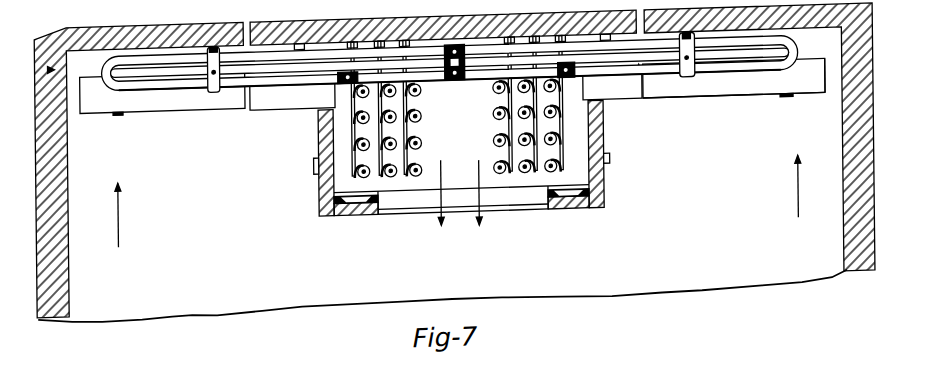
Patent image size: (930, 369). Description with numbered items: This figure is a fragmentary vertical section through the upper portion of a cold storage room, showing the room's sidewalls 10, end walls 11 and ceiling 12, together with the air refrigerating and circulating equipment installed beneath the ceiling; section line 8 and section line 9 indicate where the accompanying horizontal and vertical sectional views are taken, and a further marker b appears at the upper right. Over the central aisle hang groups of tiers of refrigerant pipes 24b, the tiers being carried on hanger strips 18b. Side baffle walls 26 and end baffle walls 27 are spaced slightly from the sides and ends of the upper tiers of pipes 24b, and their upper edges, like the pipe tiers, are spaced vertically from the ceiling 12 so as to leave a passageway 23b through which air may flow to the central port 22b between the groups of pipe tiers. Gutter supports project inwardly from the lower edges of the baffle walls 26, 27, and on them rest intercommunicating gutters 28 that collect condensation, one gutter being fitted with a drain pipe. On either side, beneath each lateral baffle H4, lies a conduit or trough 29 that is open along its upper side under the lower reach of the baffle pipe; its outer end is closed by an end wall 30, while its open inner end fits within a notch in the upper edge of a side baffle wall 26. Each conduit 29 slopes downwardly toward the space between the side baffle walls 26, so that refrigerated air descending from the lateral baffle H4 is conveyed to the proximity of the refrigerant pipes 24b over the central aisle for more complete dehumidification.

The section line 8— 8 is at (34, 40).
The section line 9— 9 is at (583, 9).
The section line b is at (880, 41).
The sidewalls 10 is at (62, 283).
The end walls 11 is at (717, 280).
The ceiling 12 is at (800, 35).
The conveyor chain strands 18b is at (352, 150).
The central port 22b is at (450, 161).
The passageway 23b is at (506, 60).
The refrigerant pipes 24b is at (419, 107).
The side baffle walls 26 is at (316, 142).
The end baffle walls 27 is at (340, 118).
The gutters 28 is at (357, 210).
The conduit or trough 29 is at (698, 106).
The end wall 30 is at (824, 88).
The heater unit H4 is at (753, 90).